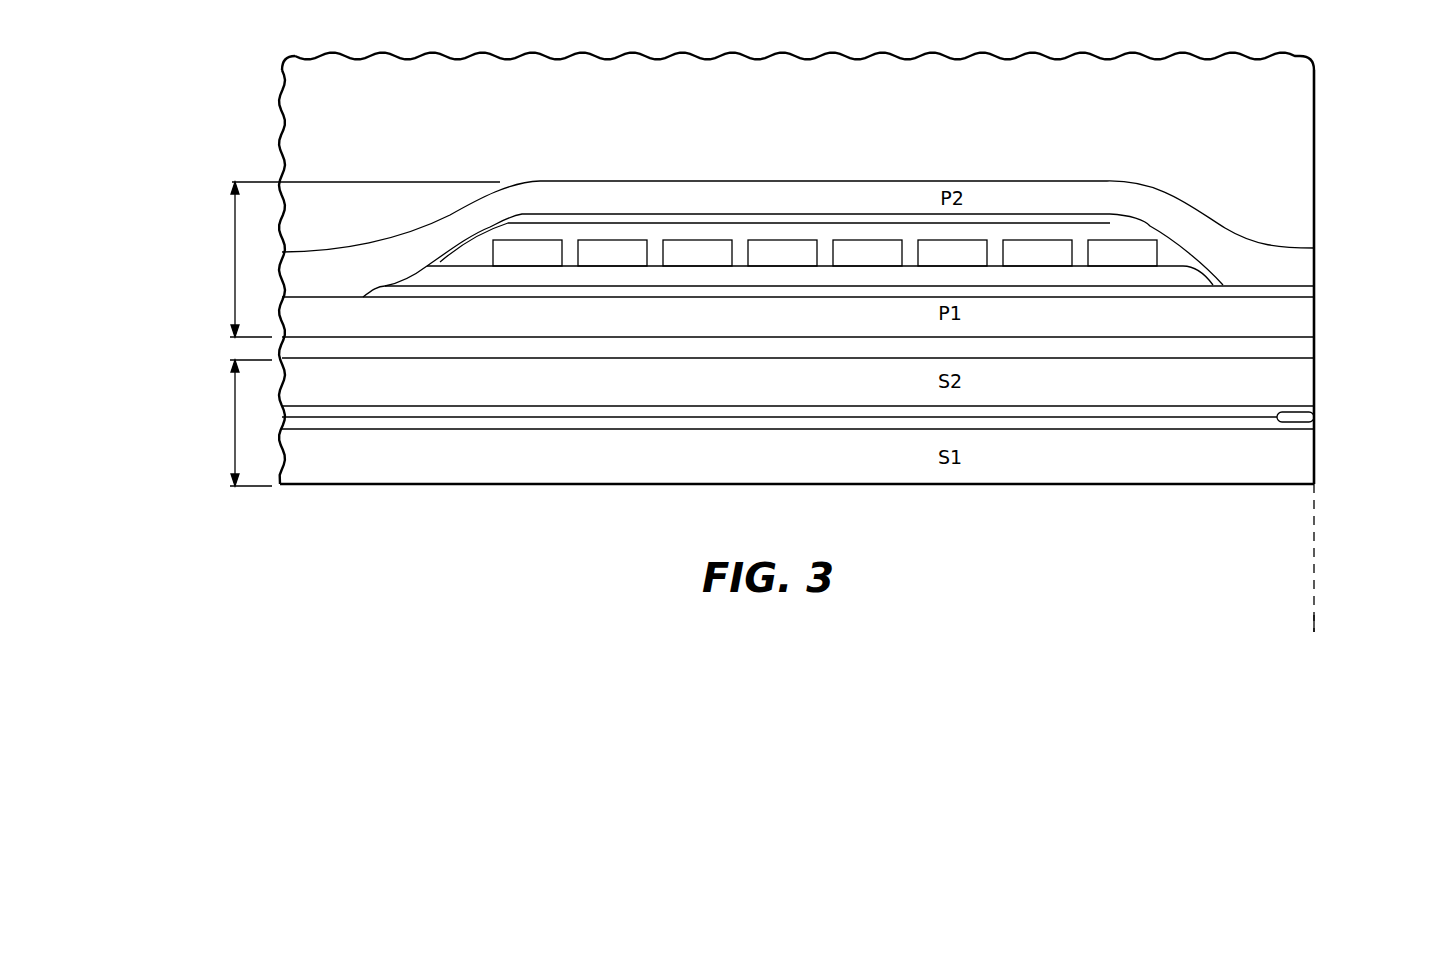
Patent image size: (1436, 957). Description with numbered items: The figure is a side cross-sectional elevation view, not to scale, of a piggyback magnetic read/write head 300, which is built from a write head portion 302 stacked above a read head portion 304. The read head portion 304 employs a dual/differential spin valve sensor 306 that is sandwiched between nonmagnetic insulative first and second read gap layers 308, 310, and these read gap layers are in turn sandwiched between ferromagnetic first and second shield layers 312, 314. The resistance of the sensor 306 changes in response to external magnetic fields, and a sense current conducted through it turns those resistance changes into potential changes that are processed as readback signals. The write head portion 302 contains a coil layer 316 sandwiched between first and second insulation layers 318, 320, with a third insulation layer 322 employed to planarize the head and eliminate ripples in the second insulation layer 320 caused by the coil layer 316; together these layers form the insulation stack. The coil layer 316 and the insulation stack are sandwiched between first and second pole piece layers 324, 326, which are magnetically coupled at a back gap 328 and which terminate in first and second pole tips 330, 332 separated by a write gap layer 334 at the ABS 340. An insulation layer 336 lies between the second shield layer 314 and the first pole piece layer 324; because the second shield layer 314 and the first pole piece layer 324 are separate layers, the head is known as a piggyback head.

The magnetic read/write head 300 is at (247, 82).
The write head portion 302 is at (234, 262).
The read head portion 304 is at (234, 428).
The dual/differential spin valve sensor 306 is at (1314, 417).
The first read gap layer 308 is at (873, 430).
The second read gap layer 310 is at (850, 405).
The first shield layer 312 is at (1182, 475).
The second shield layer 314 is at (798, 376).
The coil layer 316 is at (777, 247).
The first insulation layer 318 is at (650, 275).
The second insulation layer 320 is at (1177, 250).
The third insulation layer 322 is at (583, 218).
The first pole piece layer 324 is at (798, 312).
The second pole piece layer 326 is at (1010, 183).
The back gap 328 is at (318, 297).
The first pole tip 330 is at (1314, 320).
The second pole tip 332 is at (1314, 266).
The write gap layer 334 is at (1314, 288).
The insulation layer 336 is at (1045, 350).
The ABS 340 is at (1316, 623).